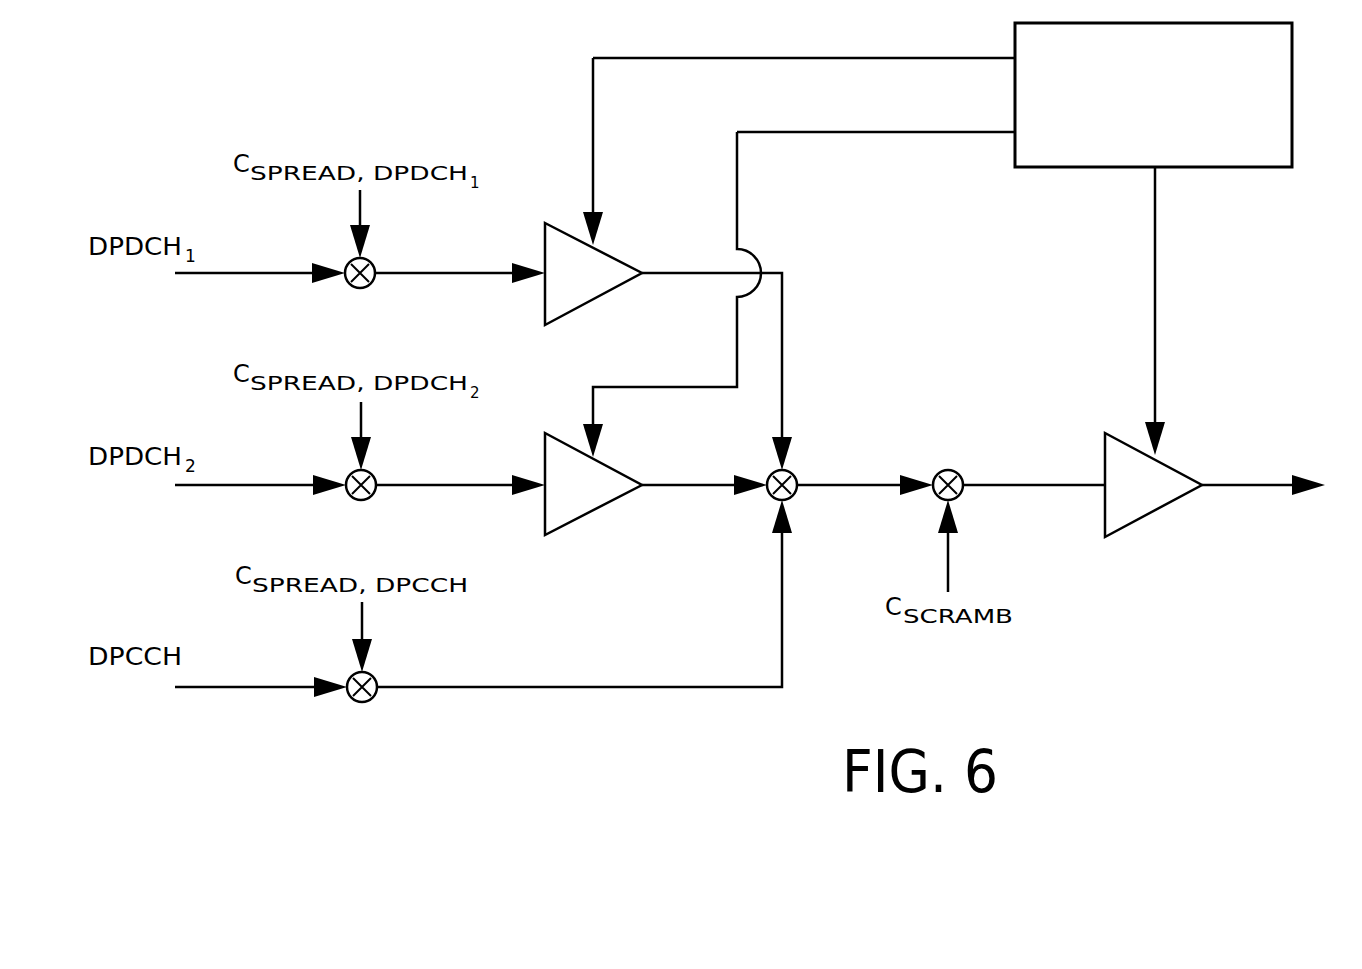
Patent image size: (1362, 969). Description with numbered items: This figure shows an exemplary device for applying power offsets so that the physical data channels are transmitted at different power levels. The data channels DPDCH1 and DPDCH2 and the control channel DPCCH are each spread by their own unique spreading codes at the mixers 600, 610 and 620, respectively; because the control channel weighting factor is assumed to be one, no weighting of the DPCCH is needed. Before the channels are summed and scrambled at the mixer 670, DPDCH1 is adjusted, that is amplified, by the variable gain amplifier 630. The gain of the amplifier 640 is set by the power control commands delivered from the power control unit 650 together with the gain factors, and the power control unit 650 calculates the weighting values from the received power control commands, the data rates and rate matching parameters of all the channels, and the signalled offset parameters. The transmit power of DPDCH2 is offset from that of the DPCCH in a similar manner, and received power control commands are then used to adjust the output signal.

The mixer 600 is at (355, 286).
The mixer 610 is at (356, 497).
The mixer 620 is at (356, 700).
The variable gain amplifier 630 is at (795, 471).
The amplifier 640 is at (617, 287).
The power control unit 650 is at (1080, 168).
The mixer 670 is at (1183, 472).